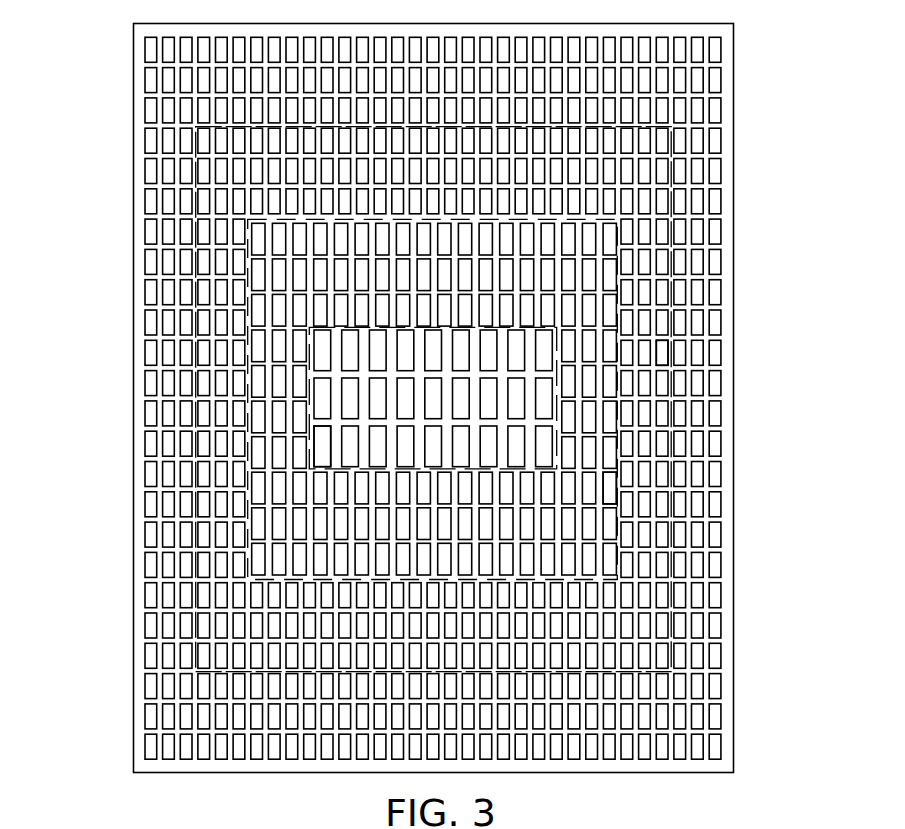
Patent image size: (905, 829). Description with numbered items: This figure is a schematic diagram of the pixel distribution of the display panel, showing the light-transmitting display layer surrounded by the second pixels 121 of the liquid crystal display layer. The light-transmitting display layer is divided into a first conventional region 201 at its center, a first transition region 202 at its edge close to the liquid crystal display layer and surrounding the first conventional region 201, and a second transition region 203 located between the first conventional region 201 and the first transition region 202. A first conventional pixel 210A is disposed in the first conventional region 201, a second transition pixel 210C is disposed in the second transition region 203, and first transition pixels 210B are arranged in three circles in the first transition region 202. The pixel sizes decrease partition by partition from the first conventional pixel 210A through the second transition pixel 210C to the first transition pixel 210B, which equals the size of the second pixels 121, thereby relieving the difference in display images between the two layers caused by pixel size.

The second pixels 121 is at (721, 51).
The first transition region 202 is at (653, 291).
The second transition region 203 is at (598, 413).
The first conventional region 201 is at (332, 381).
The first conventional pixel 210A is at (323, 445).
The first transition pixel 210B is at (664, 357).
The second transition pixel 210C is at (611, 491).